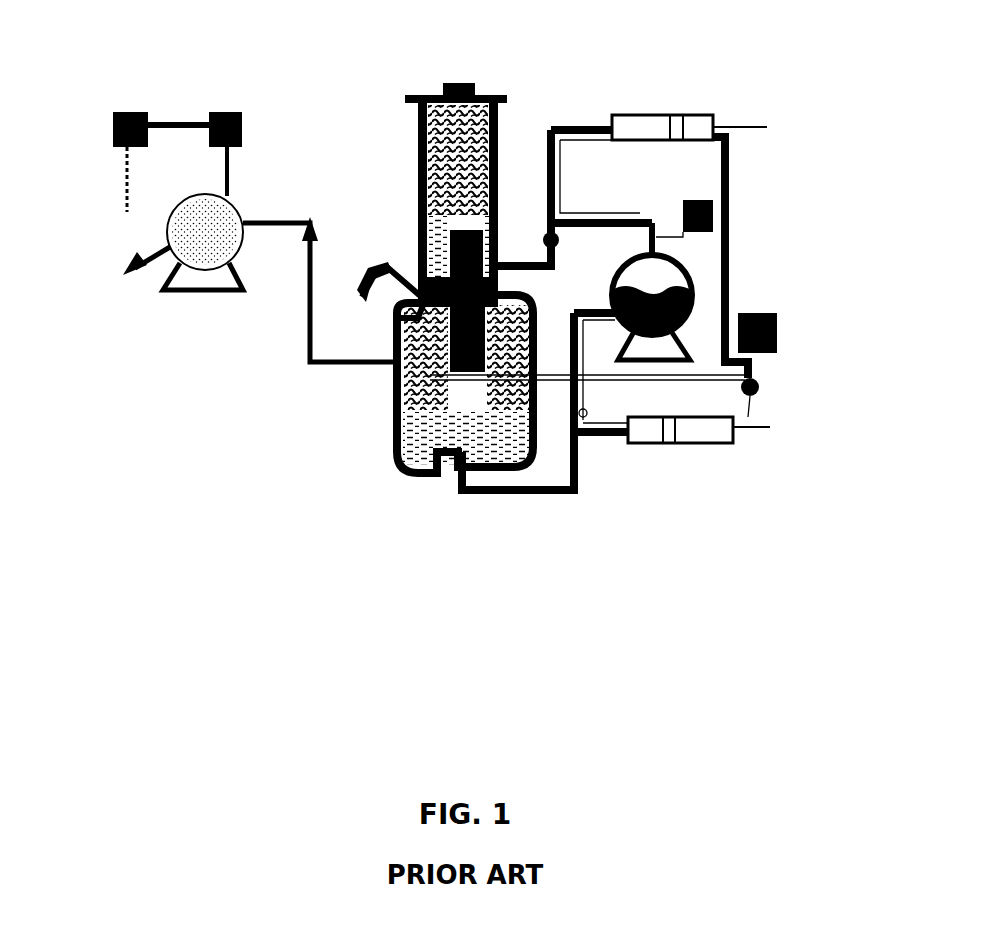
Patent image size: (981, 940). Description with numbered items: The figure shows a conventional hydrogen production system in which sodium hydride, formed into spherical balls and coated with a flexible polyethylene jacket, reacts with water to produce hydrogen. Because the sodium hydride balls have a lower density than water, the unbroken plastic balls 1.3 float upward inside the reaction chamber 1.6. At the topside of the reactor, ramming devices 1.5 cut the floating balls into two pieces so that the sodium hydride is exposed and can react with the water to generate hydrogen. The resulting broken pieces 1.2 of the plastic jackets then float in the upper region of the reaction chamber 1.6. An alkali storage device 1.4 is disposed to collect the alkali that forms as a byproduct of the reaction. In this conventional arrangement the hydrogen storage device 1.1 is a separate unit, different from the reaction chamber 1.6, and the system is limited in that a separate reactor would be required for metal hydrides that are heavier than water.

The hydrogen storage device 1.1 is at (167, 223).
The broken pieces 1.2 is at (418, 157).
The unbroken plastic balls 1.3 is at (466, 405).
The alkali storage device 1.4 is at (686, 275).
The ramming devices 1.5 is at (690, 115).
The reaction chamber 1.6 is at (495, 95).